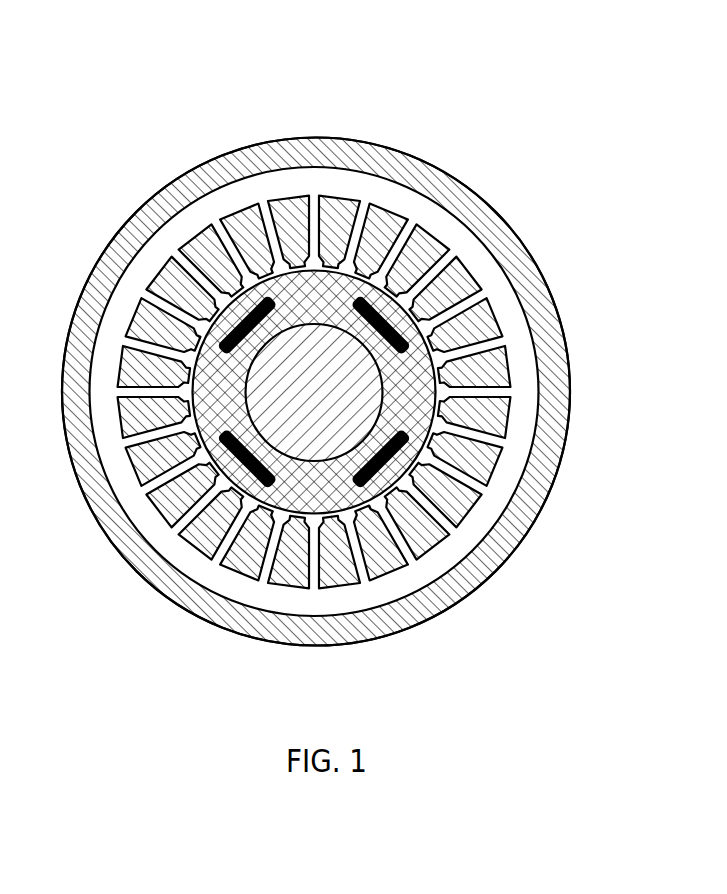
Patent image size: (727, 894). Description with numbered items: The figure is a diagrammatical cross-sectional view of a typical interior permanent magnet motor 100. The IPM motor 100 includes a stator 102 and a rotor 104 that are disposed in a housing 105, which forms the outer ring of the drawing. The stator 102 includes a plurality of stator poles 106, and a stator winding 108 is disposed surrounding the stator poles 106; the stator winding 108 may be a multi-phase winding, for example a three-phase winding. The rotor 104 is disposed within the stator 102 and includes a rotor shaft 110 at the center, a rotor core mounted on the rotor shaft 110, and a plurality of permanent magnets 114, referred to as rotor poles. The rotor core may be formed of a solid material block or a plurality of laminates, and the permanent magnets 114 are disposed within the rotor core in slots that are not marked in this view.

The interior permanent magnet (IPM) motor 100 is at (517, 52).
The stator 102 is at (469, 251).
The rotor 104 is at (223, 298).
The housing 105 is at (464, 185).
The stator poles 106 is at (500, 395).
The stator winding 108 is at (333, 392).
The rotor shaft 110 is at (322, 433).
The permanent magnets 114 is at (230, 470).